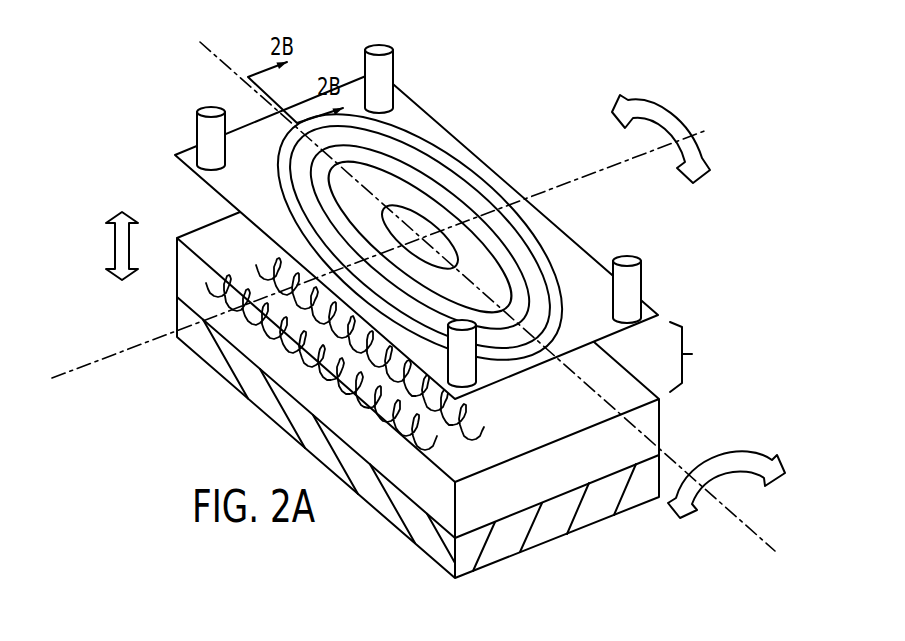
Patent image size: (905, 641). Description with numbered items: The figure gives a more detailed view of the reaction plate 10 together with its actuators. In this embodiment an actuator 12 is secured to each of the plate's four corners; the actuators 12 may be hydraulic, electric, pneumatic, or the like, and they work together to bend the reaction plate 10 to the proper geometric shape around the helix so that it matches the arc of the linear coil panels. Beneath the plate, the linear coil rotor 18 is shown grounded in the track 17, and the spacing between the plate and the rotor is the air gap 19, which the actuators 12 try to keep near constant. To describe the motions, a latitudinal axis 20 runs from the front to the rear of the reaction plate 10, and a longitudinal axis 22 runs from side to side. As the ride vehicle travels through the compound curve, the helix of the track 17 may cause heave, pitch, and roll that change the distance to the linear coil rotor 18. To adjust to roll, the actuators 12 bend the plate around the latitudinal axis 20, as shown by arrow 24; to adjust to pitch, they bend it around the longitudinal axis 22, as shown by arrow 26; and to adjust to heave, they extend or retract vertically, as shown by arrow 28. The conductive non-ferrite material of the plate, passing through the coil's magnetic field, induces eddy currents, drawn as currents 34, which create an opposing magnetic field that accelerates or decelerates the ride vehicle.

The reaction plate 10 is at (423, 83).
The actuator 12 is at (360, 65).
The track 17 is at (385, 537).
The linear coil rotor 18 is at (183, 287).
The air gap 19 is at (692, 354).
The latitudinal axis 20 is at (90, 362).
The longitudinal axis 22 is at (747, 525).
The arrow 24 is at (677, 117).
The arrow 26 is at (718, 455).
The arrow 28 is at (112, 247).
The currents 34 is at (447, 163).